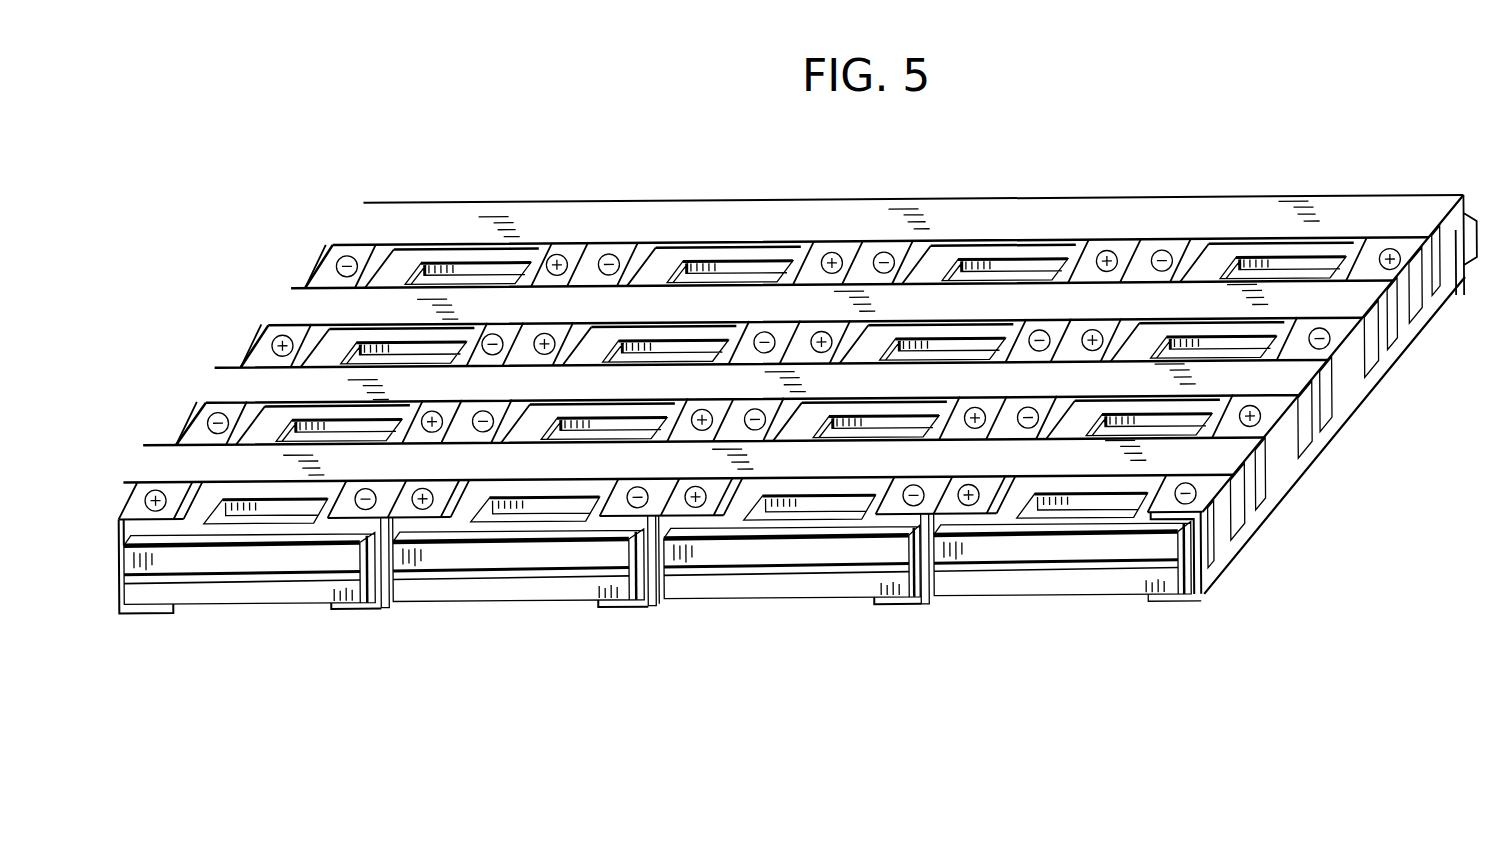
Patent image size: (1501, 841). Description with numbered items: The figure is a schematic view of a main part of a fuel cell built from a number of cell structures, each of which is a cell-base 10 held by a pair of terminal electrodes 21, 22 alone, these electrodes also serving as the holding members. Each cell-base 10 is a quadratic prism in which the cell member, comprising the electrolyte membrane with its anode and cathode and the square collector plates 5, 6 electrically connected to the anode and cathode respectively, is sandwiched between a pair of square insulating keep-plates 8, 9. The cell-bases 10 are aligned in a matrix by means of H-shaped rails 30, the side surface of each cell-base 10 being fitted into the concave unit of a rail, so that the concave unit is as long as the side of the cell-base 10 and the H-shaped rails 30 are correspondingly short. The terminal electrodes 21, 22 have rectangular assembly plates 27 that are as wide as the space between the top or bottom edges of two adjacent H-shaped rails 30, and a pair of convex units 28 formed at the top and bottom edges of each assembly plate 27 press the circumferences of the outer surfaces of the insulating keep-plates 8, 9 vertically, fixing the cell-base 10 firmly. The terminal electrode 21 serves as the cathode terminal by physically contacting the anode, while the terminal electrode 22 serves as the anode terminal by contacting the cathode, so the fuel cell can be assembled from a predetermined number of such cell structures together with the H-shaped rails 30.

The collector plate 5 is at (1030, 558).
The collector plate 6 is at (1104, 572).
The insulating keep-plate 8 is at (1082, 546).
The insulating keep-plate 9 is at (1138, 584).
The cell-base 10 is at (463, 614).
The terminal electrode 21 is at (625, 606).
The terminal electrode 22 is at (667, 606).
The assembly plate 27 is at (1262, 494).
The convex unit 28 is at (1292, 458).
The H-shaped rail 30 is at (1448, 284).